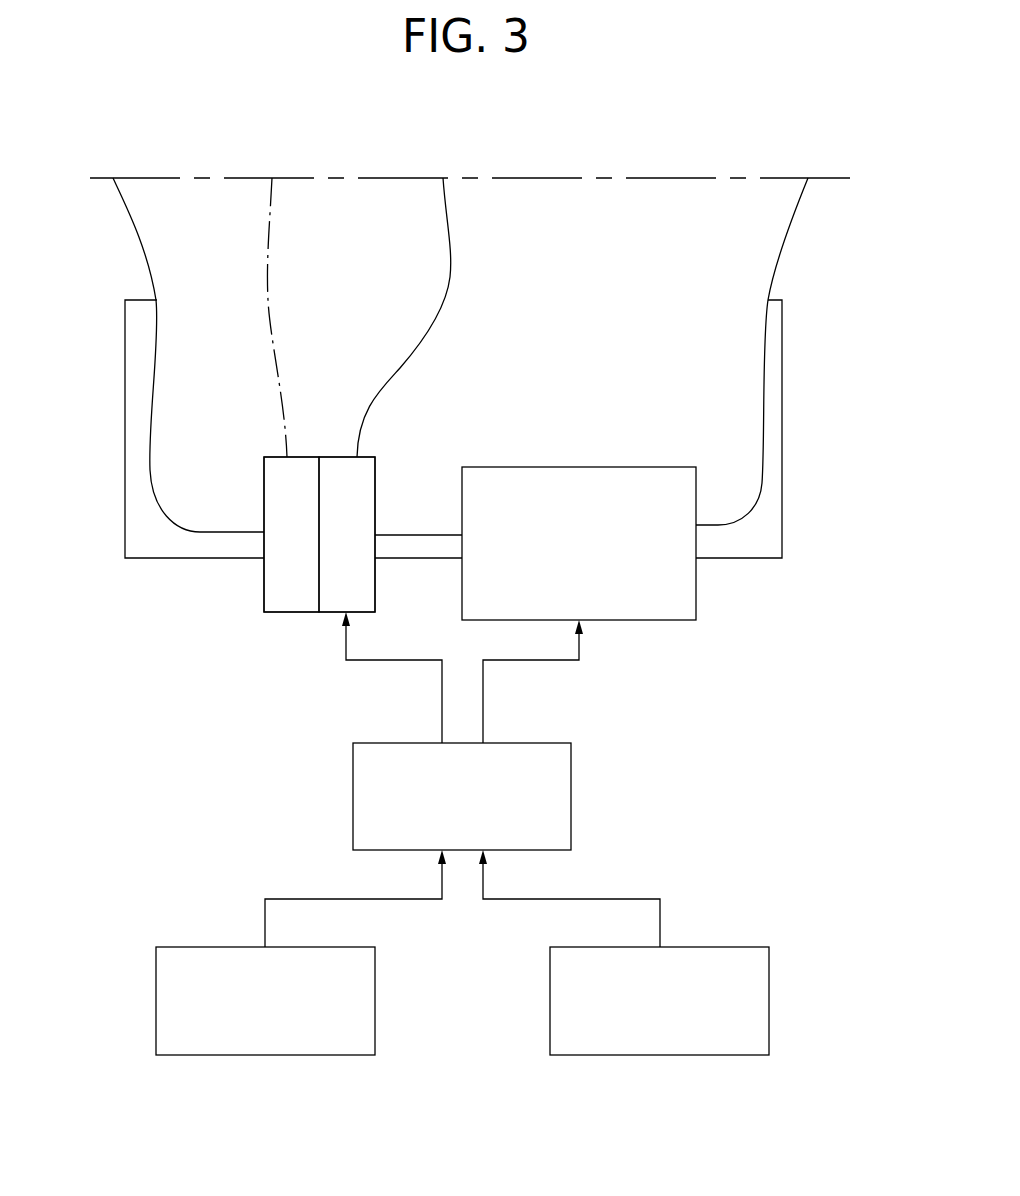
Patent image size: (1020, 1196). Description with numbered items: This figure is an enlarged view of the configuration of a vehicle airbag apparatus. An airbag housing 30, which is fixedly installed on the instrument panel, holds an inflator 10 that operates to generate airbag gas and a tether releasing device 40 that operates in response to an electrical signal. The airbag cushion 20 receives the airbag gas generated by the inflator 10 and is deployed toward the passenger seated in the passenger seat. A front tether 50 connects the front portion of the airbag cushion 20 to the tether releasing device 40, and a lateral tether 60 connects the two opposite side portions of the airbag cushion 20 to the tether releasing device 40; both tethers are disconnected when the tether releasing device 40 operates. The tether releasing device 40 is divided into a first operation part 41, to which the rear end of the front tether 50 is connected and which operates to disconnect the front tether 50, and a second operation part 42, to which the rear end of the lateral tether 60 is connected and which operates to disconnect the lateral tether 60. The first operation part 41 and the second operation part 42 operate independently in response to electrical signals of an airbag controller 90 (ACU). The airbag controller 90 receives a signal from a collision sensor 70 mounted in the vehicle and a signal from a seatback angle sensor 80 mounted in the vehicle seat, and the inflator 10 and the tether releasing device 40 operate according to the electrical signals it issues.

The inflator 10 is at (659, 605).
The airbag cushion 20 is at (143, 233).
The airbag housing 30 is at (782, 525).
The tether releasing device 40 is at (206, 539).
The first operation part 41 is at (347, 522).
The second operation part 42 is at (282, 483).
The front tether 50 is at (450, 277).
The lateral tether 60 is at (262, 273).
The collision sensor 70 is at (769, 1000).
The seatback angle sensor 80 is at (156, 1002).
The airbag controller 90 is at (353, 795).